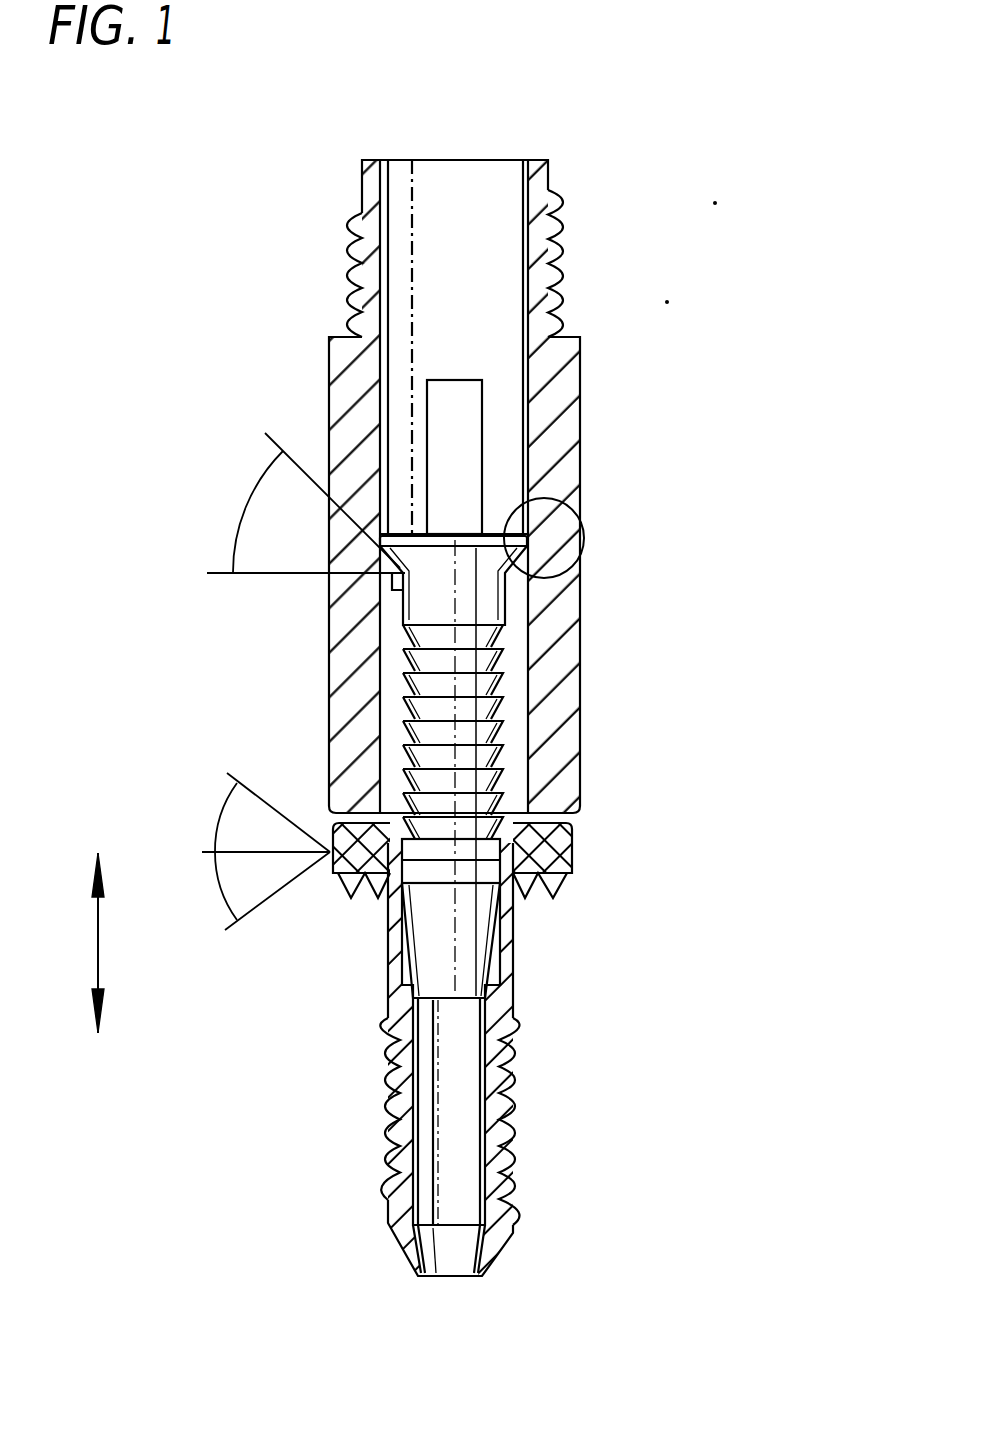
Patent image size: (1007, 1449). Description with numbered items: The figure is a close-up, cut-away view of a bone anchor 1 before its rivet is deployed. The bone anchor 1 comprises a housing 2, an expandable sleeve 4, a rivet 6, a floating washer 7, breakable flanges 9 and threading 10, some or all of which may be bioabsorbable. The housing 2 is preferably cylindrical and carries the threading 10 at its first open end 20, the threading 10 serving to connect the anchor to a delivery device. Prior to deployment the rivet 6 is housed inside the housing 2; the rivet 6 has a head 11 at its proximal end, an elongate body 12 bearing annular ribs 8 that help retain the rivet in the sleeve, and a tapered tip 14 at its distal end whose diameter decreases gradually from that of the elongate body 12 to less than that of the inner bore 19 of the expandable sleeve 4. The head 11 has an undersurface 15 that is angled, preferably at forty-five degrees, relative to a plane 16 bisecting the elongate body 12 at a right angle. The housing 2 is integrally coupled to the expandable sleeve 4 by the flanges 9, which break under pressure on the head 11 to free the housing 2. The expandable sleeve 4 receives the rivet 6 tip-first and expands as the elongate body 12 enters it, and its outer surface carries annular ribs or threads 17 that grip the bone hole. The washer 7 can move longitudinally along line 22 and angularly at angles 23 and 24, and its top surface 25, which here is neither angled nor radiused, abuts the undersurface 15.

The bone anchor 1 is at (222, 397).
The housing 2 is at (582, 427).
The expandable sleeve 4 is at (372, 1110).
The rivet 6 is at (372, 697).
The floating washer 7 is at (572, 863).
The annular ribs 8 is at (577, 808).
The breakable flanges 9 is at (578, 810).
The threading 10 is at (558, 248).
The head 11 is at (588, 517).
The elongate body 12 is at (497, 708).
The tapered tip 14 is at (487, 958).
The undersurface 15 is at (575, 580).
The plane 16 is at (212, 575).
The annular ribs or threads 17 is at (513, 1133).
The inner bore 19 is at (462, 1247).
The first open end 20 is at (383, 110).
The line 22 is at (98, 958).
The angle 23 is at (218, 818).
The angle 24 is at (216, 885).
The top surface 25 is at (330, 782).